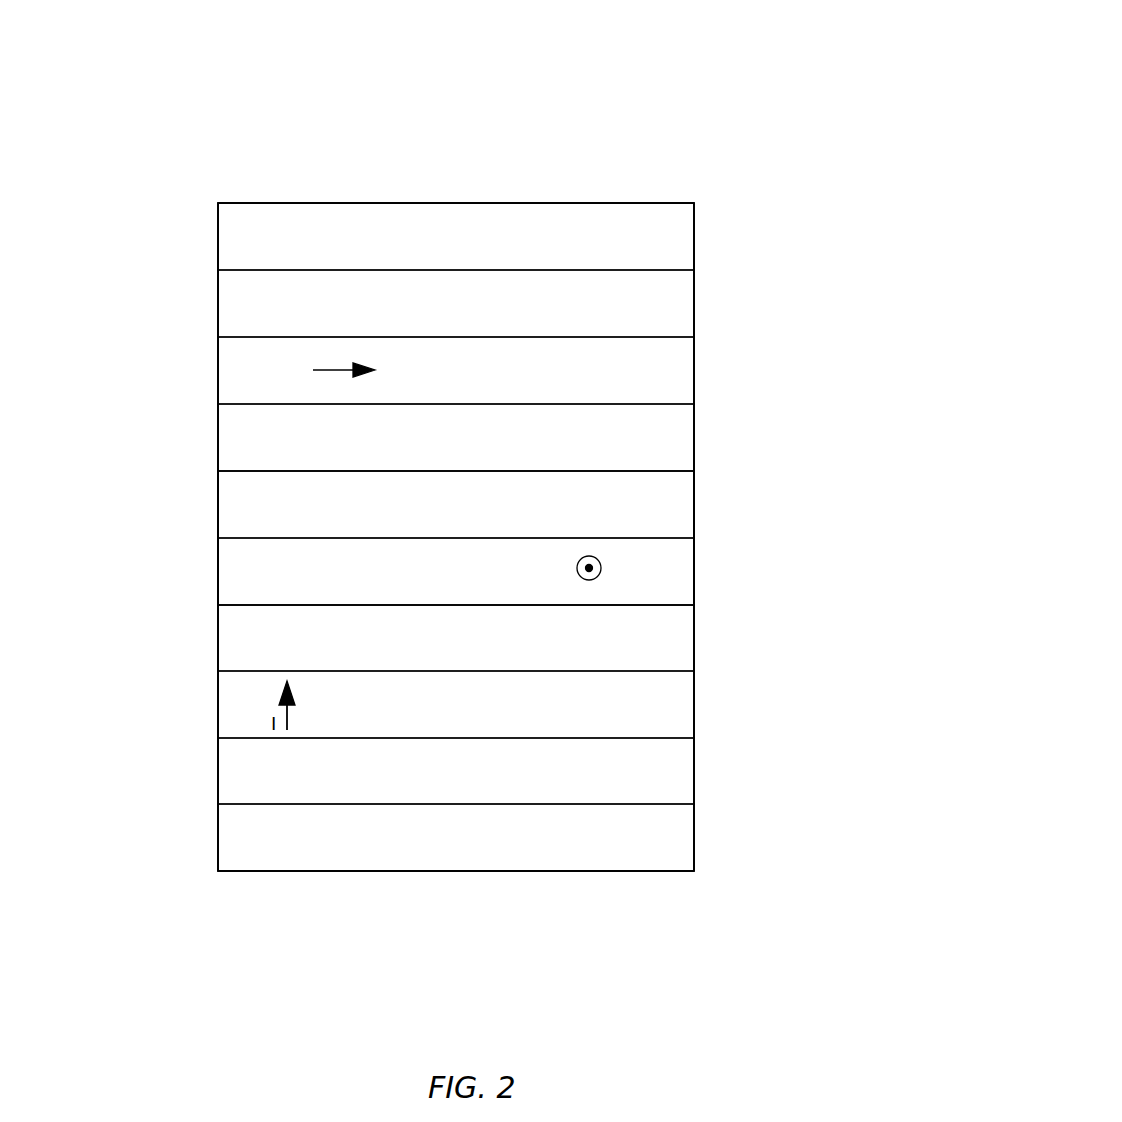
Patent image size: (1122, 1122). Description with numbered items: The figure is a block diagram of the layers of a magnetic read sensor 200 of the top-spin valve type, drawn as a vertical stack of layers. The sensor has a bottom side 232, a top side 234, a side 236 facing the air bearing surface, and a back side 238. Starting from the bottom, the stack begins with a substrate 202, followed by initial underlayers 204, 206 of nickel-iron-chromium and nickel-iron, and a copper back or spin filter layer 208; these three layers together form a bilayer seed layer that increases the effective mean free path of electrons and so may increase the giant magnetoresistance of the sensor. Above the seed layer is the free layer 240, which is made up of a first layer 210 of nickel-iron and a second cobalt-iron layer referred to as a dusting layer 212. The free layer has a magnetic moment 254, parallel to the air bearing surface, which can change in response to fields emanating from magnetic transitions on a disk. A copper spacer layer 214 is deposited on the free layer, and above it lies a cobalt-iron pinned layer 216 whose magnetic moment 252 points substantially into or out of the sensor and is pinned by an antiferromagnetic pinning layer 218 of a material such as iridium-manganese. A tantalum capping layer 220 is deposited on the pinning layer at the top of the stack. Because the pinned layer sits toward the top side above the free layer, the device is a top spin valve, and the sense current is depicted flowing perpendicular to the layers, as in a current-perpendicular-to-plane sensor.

The magnetic read sensor 200 is at (736, 44).
The substrate 202 is at (694, 837).
The initial underlayer 204 is at (694, 769).
The initial underlayer 206 is at (694, 702).
The back or spin filter layer 208 is at (694, 636).
The first layer 210 is at (694, 569).
The dusting layer 212 is at (694, 502).
The spacer layer 214 is at (694, 435).
The pinned layer 216 is at (694, 368).
The pinning layer 218 is at (694, 301).
The capping layer 220 is at (694, 234).
The bottom side 232 is at (531, 905).
The top side 234 is at (380, 175).
The side facing the air bearing surface 236 is at (128, 465).
The back side 238 is at (820, 425).
The free layer 240 is at (215, 472).
The magnetic moment 252 is at (322, 372).
The magnetic moment 254 is at (601, 566).